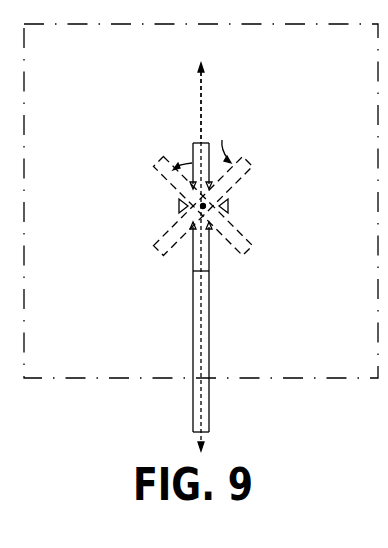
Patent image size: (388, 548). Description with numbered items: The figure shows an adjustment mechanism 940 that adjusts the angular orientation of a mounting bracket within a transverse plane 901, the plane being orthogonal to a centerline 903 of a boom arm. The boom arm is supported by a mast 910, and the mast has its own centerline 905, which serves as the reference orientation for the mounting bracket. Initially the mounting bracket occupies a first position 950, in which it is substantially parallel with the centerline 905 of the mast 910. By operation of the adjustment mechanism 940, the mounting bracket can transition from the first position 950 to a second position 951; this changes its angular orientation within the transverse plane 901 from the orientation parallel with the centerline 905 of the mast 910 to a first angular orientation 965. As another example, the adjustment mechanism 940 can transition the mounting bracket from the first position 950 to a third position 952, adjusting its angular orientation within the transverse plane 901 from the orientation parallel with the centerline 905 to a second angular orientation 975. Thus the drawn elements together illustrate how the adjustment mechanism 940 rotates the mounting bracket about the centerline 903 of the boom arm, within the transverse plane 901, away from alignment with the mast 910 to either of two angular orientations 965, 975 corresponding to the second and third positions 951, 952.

The transverse plane 901 is at (81, 58).
The centerline of a boom arm 903 is at (179, 205).
The centerline of a mast 905 is at (200, 361).
The mast 910 is at (193, 316).
The adjustment mechanism 940 is at (228, 205).
The first position 950 is at (196, 143).
The second position 951 is at (157, 168).
The third position 952 is at (254, 164).
The first angular orientation 965 is at (176, 166).
The second angular orientation 975 is at (222, 140).